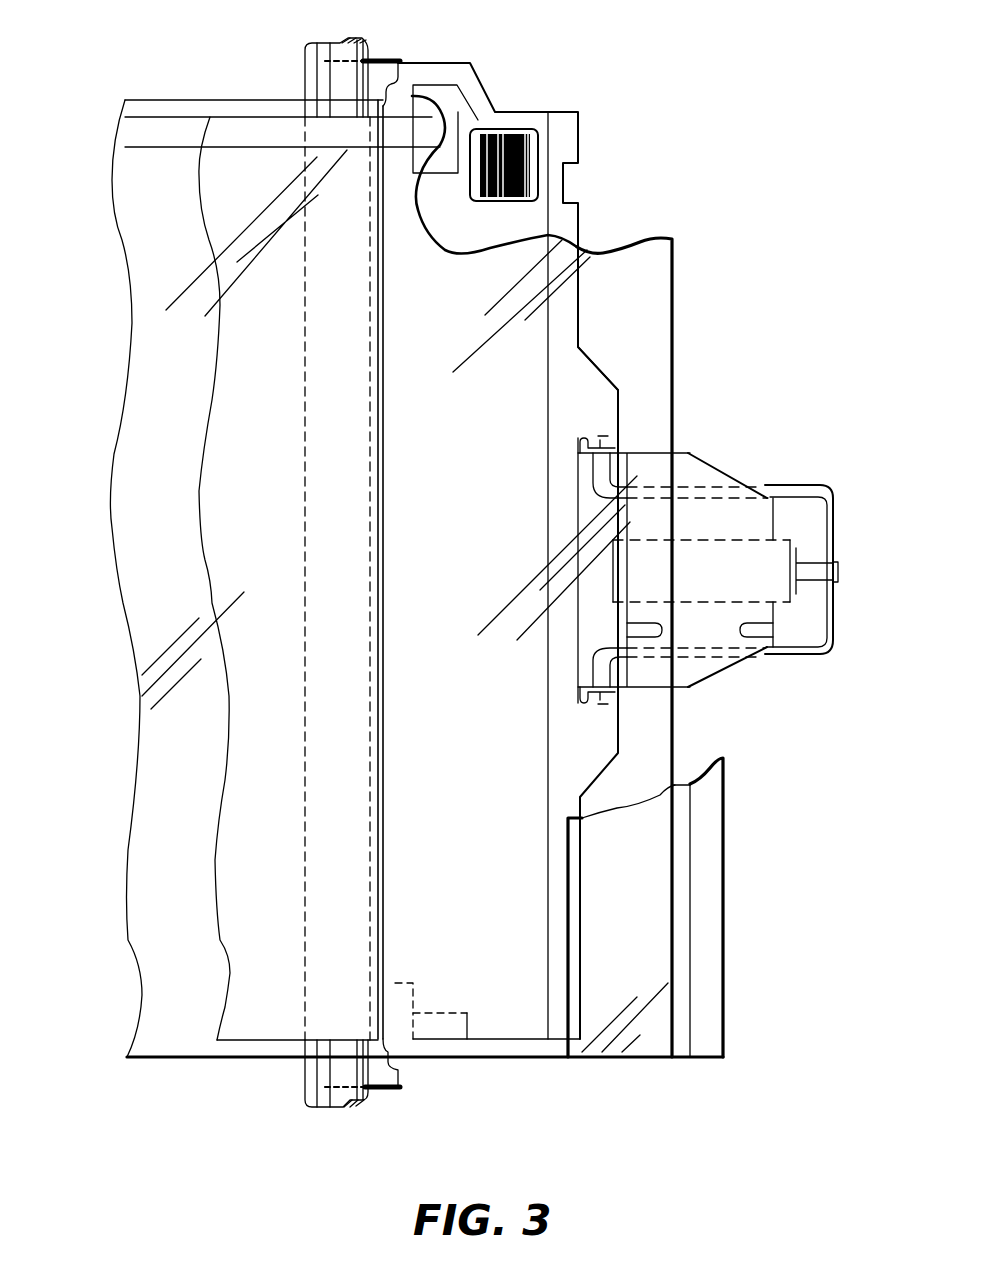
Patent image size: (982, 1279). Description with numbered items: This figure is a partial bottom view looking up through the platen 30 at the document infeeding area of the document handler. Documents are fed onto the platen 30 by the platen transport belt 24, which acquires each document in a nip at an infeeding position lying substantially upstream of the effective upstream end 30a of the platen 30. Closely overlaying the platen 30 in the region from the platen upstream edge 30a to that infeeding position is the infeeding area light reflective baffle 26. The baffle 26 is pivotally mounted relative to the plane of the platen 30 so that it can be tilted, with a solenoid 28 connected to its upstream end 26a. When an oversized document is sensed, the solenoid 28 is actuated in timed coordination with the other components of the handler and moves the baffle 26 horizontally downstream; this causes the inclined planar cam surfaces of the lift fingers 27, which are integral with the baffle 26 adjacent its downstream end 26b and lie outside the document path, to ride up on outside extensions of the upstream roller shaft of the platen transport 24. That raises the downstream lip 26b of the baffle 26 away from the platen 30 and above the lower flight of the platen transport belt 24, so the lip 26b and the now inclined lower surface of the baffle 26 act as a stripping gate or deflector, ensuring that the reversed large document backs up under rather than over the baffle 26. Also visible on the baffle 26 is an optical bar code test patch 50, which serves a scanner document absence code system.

The platen transport belt 24 is at (270, 1018).
The infeeding area light reflective baffle 26 is at (522, 112).
The upstream end of baffle 26a is at (585, 348).
The downstream end (lip) of baffle 26b is at (387, 530).
The lift fingers 27 is at (392, 58).
The solenoid 28 is at (793, 605).
The platen 30 is at (632, 240).
The upstream end (edge) of platen 30a is at (569, 1060).
The optical bar code test patch 50 is at (513, 202).